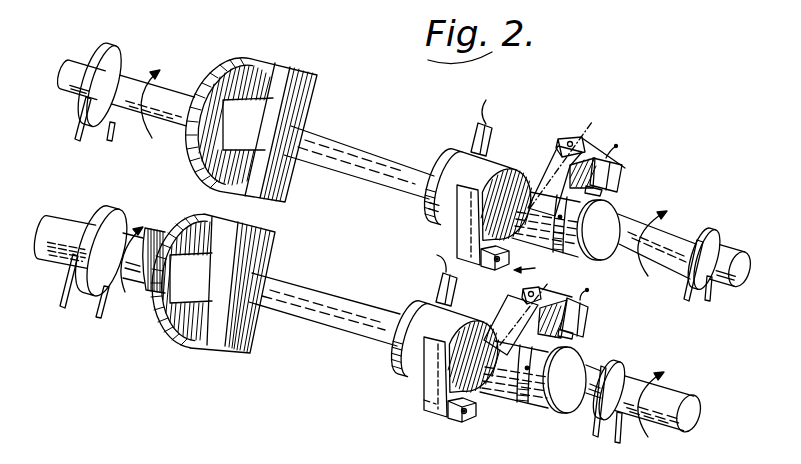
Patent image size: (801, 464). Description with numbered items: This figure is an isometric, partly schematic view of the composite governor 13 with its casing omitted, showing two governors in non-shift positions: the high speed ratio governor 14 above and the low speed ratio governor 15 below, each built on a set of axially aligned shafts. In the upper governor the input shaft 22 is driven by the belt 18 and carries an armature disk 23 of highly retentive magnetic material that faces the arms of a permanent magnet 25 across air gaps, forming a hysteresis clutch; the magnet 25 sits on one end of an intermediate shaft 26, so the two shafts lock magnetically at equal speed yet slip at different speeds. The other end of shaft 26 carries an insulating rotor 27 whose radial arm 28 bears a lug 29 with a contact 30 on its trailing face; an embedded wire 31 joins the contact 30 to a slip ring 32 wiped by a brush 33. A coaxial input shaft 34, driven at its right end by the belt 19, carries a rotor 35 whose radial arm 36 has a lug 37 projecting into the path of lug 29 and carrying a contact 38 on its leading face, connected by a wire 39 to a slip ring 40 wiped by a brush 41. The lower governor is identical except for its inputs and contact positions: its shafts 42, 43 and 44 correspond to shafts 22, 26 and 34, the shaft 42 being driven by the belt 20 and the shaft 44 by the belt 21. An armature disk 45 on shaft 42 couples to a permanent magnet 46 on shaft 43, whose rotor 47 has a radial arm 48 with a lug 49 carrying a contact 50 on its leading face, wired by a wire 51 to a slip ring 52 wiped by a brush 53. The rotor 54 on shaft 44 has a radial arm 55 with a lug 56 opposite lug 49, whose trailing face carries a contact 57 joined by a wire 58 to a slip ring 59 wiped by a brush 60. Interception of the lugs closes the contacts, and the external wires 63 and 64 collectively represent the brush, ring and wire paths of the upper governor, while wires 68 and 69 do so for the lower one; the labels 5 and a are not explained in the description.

The lever assembly 5 is at (640, 111).
The composite governor 13 is at (68, 171).
The high speed ratio governor 14 is at (381, 129).
The low speed ratio governor 15 is at (315, 341).
The speed ratio connector 18 is at (75, 124).
The speed ratio connector 19 is at (686, 288).
The speed ratio connector 20 is at (62, 297).
The speed ratio connector 21 is at (601, 432).
The input shaft 22 is at (135, 72).
The armature disk 23 is at (240, 58).
The permanent magnet 25 is at (297, 69).
The intermediate shaft 26 is at (356, 161).
The rotor 27 is at (432, 210).
The radial arm 28 is at (457, 232).
The lug 29 is at (486, 266).
The contact 30 is at (510, 257).
The wire 31 is at (481, 229).
The slip ring 32 is at (447, 152).
The brush 33 is at (493, 138).
The input shaft 34 is at (733, 254).
The rotor 35 is at (603, 258).
The radial arm 36 is at (551, 166).
The lug 37 is at (566, 139).
The contact 38 is at (590, 131).
The wire 39 is at (606, 158).
The slip ring 40 is at (559, 251).
The brush 41 is at (619, 180).
The shaft 42 is at (55, 262).
The shaft 43 is at (323, 307).
The shaft 44 is at (672, 392).
The armature disk 45 is at (184, 348).
The permanent magnet 46 is at (242, 353).
The rotor 47 is at (398, 354).
The radial arm 48 is at (425, 393).
The lug 49 is at (462, 414).
The contact 50 is at (452, 408).
The wire 51 is at (422, 400).
The slip ring 52 is at (405, 372).
The brush 53 is at (432, 278).
The rotor 54 is at (557, 408).
The radial arm 55 is at (512, 314).
The lug 56 is at (522, 292).
The contact 57 is at (541, 288).
The wire 58 is at (518, 402).
The slip ring 59 is at (528, 404).
The brush 60 is at (589, 325).
The wire 63 is at (490, 103).
The wire 64 is at (620, 148).
The wire 68 is at (437, 255).
The wire 69 is at (590, 296).
The direction arrow a is at (524, 279).